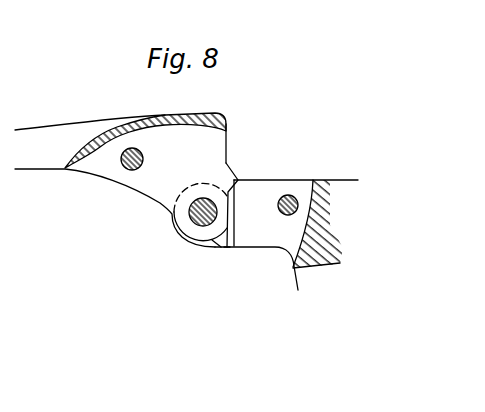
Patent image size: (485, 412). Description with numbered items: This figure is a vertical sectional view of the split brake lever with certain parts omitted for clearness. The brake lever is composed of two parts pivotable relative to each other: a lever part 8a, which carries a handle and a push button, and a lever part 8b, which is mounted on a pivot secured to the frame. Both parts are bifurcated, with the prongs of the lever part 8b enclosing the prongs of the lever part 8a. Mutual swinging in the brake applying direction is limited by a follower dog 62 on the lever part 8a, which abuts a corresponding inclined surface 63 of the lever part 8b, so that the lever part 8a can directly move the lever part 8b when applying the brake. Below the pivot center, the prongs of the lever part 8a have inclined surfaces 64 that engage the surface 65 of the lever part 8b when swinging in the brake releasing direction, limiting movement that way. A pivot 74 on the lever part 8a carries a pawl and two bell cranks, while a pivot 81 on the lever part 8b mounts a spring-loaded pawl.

The lever part 8a is at (49, 130).
The lever part 8b is at (348, 179).
The follower dog 62 is at (236, 178).
The inclined surface 63 is at (228, 197).
The inclined surfaces 64 is at (221, 248).
The surface 65 is at (228, 250).
The pivot 74 is at (122, 168).
The pivot 81 is at (291, 192).